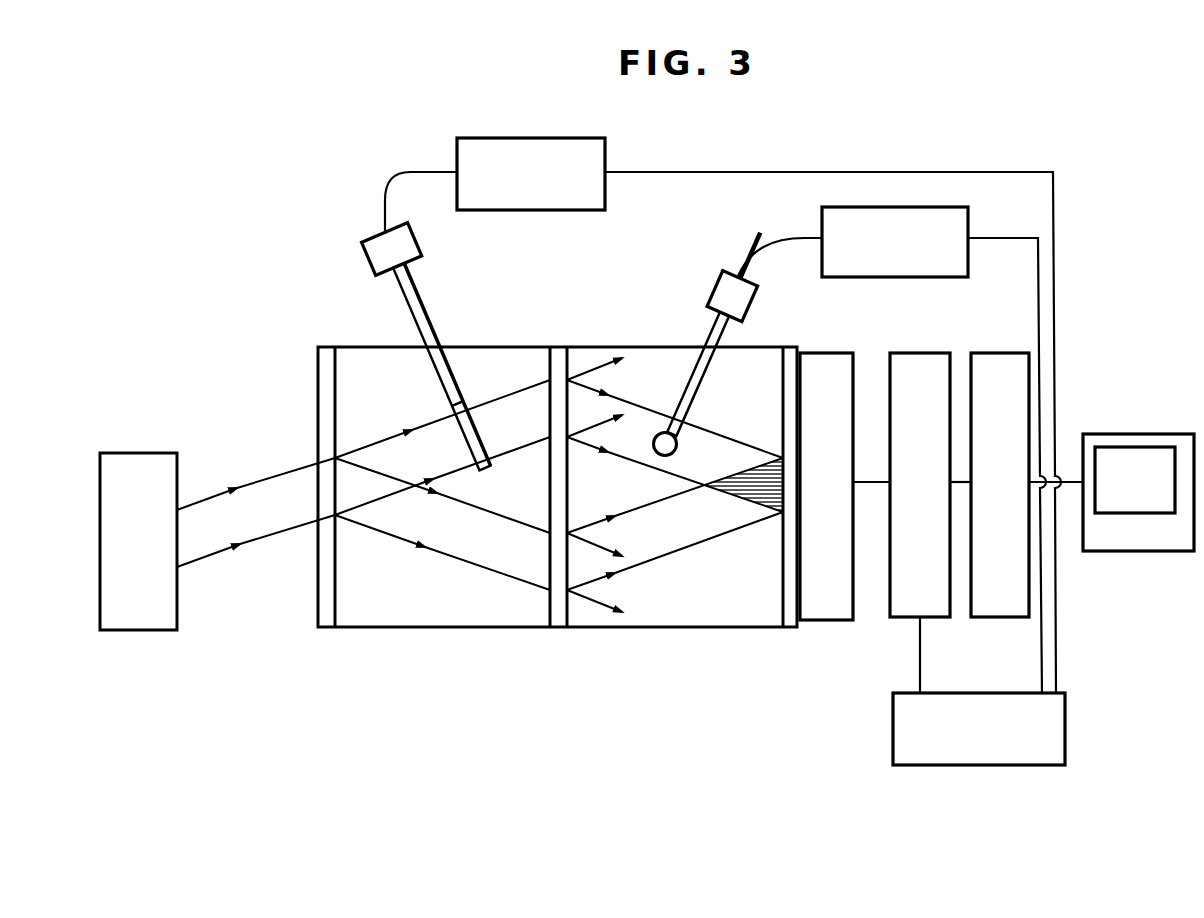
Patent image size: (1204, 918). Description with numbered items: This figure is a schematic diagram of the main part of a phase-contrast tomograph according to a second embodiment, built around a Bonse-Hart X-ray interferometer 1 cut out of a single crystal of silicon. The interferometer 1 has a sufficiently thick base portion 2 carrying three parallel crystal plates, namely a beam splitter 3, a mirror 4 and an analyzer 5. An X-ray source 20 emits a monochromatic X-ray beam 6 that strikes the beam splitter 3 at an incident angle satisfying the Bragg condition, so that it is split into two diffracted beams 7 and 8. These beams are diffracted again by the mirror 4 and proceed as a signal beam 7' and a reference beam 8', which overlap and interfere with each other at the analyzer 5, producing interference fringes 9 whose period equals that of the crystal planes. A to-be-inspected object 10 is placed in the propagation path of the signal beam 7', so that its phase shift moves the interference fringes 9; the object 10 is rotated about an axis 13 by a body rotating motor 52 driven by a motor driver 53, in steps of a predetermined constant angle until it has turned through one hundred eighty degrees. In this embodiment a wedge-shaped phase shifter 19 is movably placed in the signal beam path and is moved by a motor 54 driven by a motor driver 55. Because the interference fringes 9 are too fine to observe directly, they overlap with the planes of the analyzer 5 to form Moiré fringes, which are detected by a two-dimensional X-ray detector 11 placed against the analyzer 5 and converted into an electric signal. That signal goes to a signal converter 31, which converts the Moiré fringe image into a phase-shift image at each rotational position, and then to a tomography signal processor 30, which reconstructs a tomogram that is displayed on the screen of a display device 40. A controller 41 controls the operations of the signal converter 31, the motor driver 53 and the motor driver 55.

The Bonse-Hart X-ray interferometer 1 is at (539, 779).
The base portion 2 is at (440, 627).
The beam splitter 3 is at (322, 347).
The mirror 4 is at (552, 347).
The analyzer 5 is at (787, 347).
The monochromatic X-ray beam 6 is at (256, 512).
The diffracted beam 7 is at (442, 447).
The diffracted beam 8 is at (442, 524).
The signal beam 7' is at (675, 435).
The reference beam 8' is at (675, 535).
The interference fringes 9 is at (775, 458).
The to-be-inspected object 10 is at (657, 432).
The two-dimensional X-ray detector 11 is at (838, 353).
The axis 13 is at (758, 238).
The phase shifter 19 is at (483, 430).
The X-ray source 20 is at (140, 453).
The tomography signal processor 30 is at (1000, 353).
The signal converter 31 is at (918, 353).
The display device 40 is at (1140, 434).
The controller 41 is at (1065, 745).
The body rotating motor 52 is at (724, 270).
The motor driver 53 is at (968, 215).
The motor 54 is at (367, 247).
The motor driver 55 is at (605, 193).